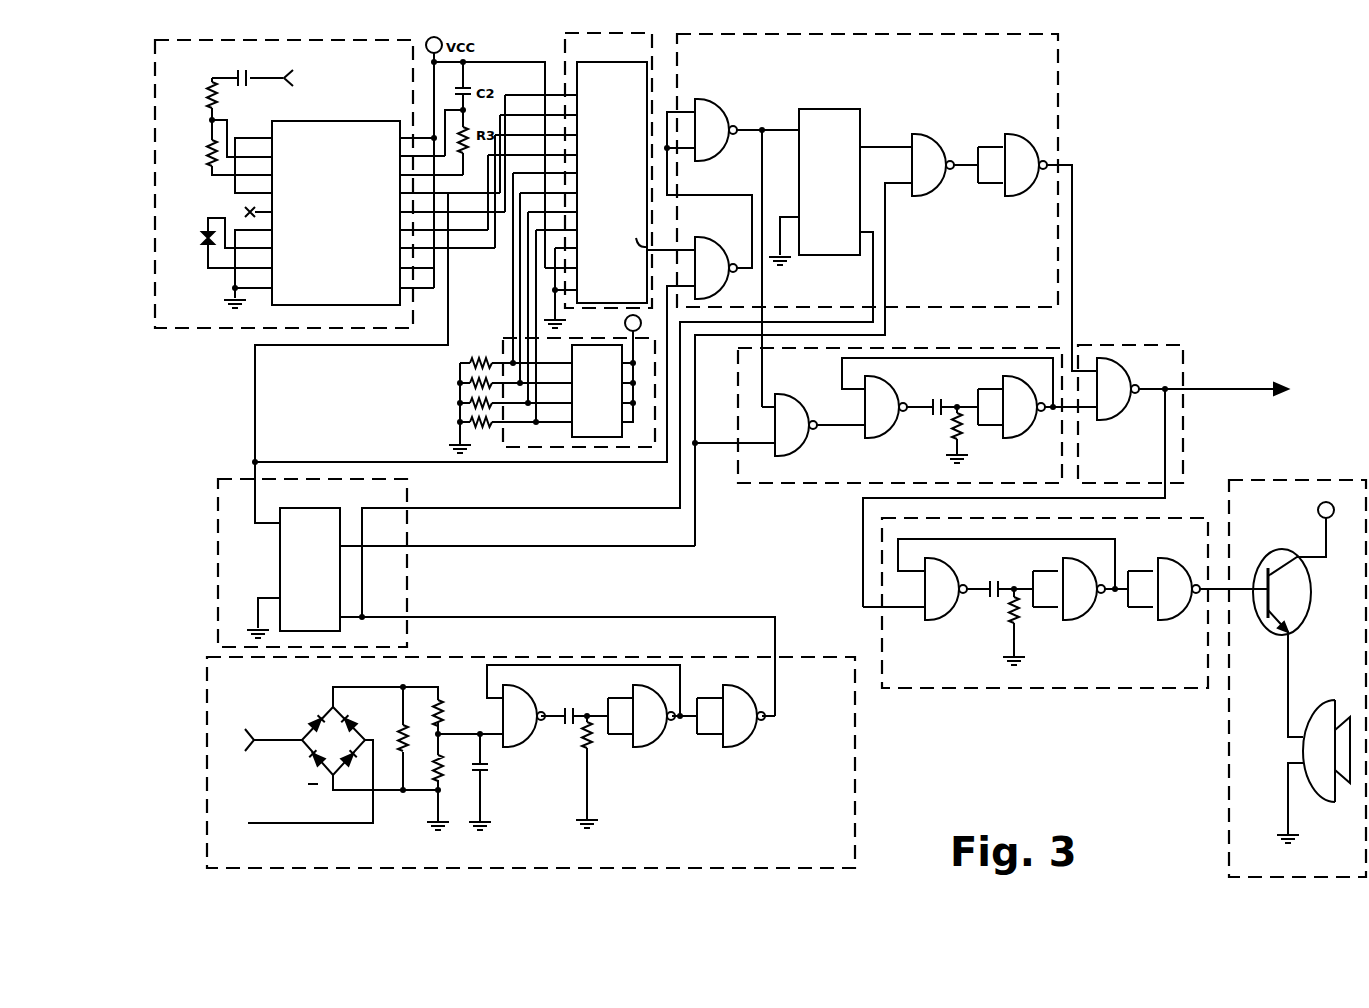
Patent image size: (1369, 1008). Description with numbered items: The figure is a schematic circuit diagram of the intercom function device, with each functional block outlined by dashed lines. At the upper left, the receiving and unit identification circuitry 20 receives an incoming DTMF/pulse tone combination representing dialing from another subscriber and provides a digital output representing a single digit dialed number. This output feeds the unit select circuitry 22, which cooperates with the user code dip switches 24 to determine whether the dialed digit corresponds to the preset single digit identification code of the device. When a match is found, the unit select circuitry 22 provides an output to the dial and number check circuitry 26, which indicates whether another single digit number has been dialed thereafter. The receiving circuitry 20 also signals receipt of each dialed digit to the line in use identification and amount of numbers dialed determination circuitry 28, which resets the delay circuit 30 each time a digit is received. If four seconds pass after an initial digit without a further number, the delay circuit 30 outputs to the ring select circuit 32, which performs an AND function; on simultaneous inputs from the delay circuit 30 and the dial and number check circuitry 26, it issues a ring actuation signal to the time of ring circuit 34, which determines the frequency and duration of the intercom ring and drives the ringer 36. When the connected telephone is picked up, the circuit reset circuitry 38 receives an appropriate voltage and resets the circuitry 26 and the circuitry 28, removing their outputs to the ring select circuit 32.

The receiving and unit identification circuitry 20 is at (154, 62).
The unit select circuitry 22 is at (562, 56).
The user code dip switches 24 is at (588, 450).
The dial and number check circuitry 26 is at (1060, 63).
The line in use identification and amount of numbers dialed determination circuitry 28 is at (223, 479).
The delay circuit 30 is at (790, 486).
The ring select circuit 32 is at (1142, 343).
The time of ring circuit 34 is at (975, 691).
The ringer 36 is at (1299, 479).
The circuit reset circuitry 38 is at (816, 655).